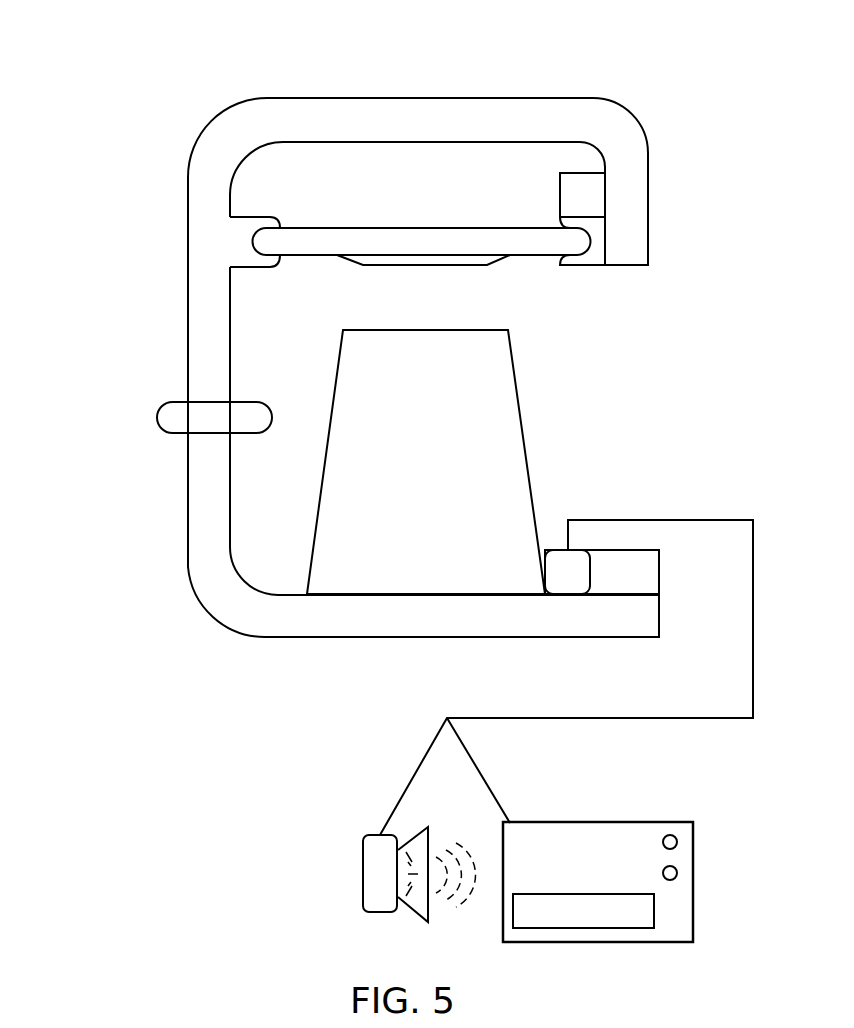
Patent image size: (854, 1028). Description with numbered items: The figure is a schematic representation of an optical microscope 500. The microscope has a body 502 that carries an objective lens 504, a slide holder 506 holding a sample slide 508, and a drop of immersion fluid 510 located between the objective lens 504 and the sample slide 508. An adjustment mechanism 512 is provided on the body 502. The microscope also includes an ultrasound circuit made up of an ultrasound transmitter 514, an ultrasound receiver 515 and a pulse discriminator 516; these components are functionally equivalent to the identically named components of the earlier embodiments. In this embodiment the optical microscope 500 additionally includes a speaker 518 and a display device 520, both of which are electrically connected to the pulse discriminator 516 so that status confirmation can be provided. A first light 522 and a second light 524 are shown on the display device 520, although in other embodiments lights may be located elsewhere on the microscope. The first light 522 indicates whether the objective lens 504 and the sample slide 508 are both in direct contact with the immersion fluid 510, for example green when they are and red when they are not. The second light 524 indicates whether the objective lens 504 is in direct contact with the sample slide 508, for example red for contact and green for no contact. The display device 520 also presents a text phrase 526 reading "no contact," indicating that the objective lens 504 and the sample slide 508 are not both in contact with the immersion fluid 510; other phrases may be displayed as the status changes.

The optical microscope 500 is at (640, 78).
The body 502 is at (198, 178).
The objective lens 504 is at (507, 452).
The slide holder 506 is at (238, 237).
The sample slide 508 is at (258, 247).
The drop of immersion fluid 510 is at (345, 260).
The adjustment mechanism 512 is at (172, 416).
The ultrasound transmitter 514 is at (598, 203).
The ultrasound receiver 515 is at (570, 565).
The pulse discriminator 516 is at (647, 572).
The speaker 518 is at (370, 875).
The display device 520 is at (627, 822).
The first light 522 is at (678, 841).
The second light 524 is at (678, 873).
The text phrase 526 is at (656, 912).